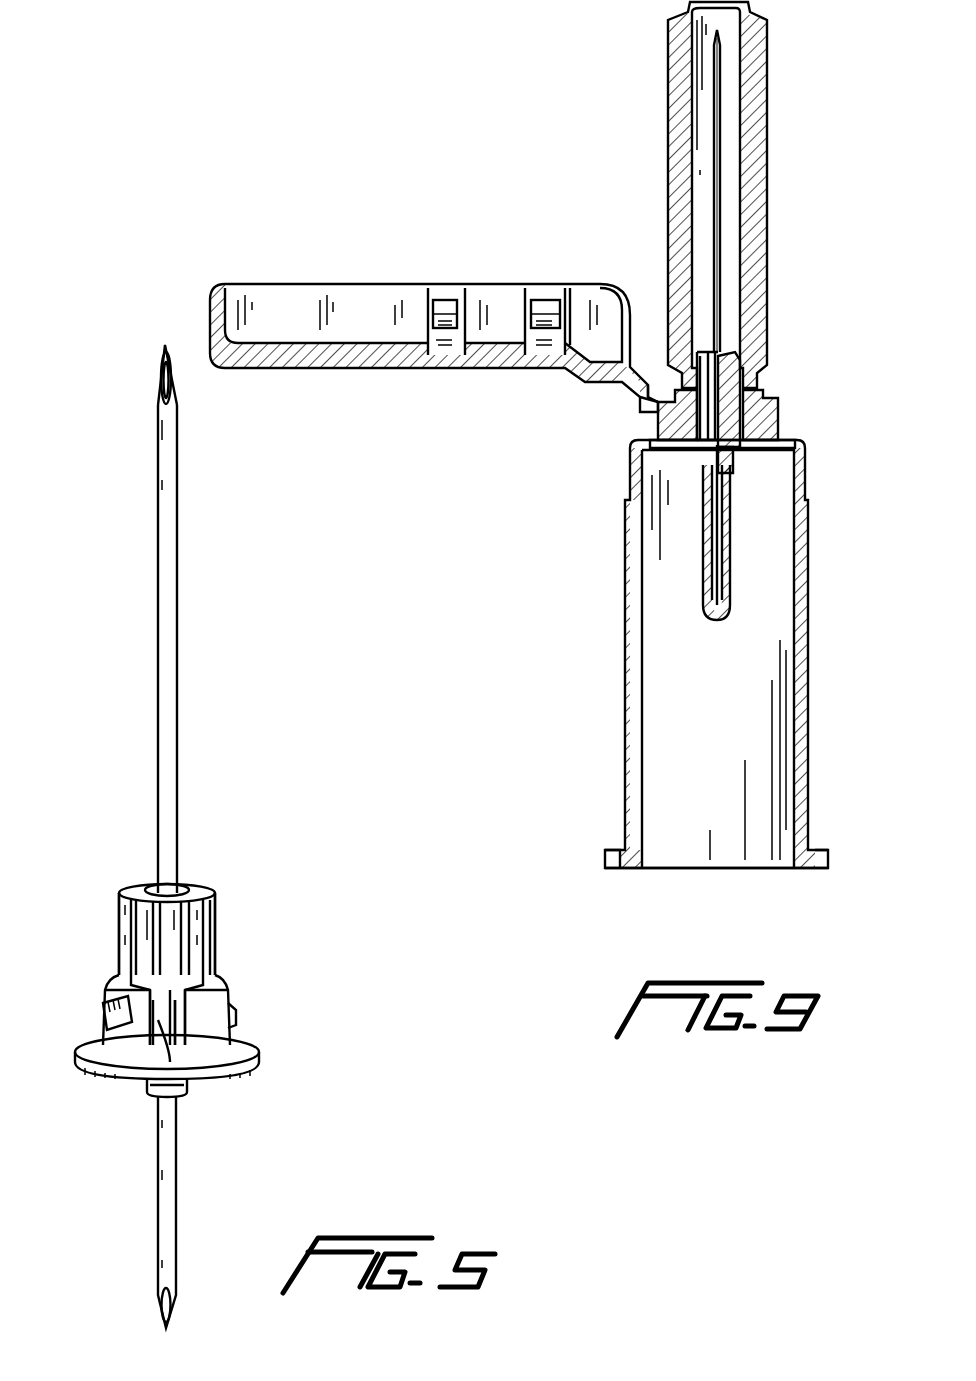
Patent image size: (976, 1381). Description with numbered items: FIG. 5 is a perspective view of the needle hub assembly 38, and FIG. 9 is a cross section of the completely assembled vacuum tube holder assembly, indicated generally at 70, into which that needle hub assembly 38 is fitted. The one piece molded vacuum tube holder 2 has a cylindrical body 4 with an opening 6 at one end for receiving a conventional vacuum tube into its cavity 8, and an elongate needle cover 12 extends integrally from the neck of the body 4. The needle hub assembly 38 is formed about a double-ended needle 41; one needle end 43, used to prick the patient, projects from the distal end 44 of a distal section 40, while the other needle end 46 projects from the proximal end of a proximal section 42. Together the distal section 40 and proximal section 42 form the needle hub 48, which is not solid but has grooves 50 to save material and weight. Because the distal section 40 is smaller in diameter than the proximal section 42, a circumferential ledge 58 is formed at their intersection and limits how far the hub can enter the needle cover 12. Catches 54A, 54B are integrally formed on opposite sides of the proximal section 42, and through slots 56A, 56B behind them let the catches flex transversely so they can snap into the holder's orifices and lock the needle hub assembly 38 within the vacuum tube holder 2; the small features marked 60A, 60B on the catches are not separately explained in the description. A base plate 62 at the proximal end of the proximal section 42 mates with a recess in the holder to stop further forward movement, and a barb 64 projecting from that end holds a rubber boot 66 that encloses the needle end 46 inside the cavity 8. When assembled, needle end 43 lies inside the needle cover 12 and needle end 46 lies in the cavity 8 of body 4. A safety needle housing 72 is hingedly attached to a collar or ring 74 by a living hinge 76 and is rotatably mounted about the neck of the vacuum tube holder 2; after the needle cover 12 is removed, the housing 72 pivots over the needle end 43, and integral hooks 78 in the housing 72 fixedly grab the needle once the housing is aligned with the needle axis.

In FIG. 9, the vacuum tube holder 2 is at (845, 532).
In FIG. 9, the cylindrical body 4 is at (808, 668).
In FIG. 9, the opening 6 is at (733, 870).
In FIG. 9, the cavity 8 is at (722, 762).
In FIG. 9, the elongate needle cover 12 is at (768, 195).
In FIG. 9, the needle hub assembly 38 is at (690, 472).
In FIG. 5, the needle hub assembly 38 is at (355, 880).
In FIG. 5, the distal section 40 is at (120, 890).
In FIG. 5, the double-ended needle 41 is at (158, 590).
In FIG. 5, the proximal section 42 is at (232, 985).
In FIG. 9, the needle end 43 is at (722, 50).
In FIG. 5, the needle end 43 is at (155, 388).
In FIG. 5, the distal end 44 is at (182, 887).
In FIG. 9, the needle end 46 is at (705, 590).
In FIG. 5, the needle end 46 is at (155, 1312).
In FIG. 9, the needle hub 48 is at (758, 366).
In FIG. 5, the grooves 50 is at (205, 1045).
In FIG. 5, the catch 54A is at (108, 985).
In FIG. 5, the catch 54B is at (232, 1010).
In FIG. 5, the through slot 56A is at (150, 1030).
In FIG. 5, the through slot 56B is at (225, 1030).
In FIG. 5, the ledge 58 is at (122, 945).
In FIG. 5, the first tab 60A is at (100, 1022).
In FIG. 5, the second tab 60B is at (240, 1022).
In FIG. 5, the base plate 62 is at (258, 1060).
In FIG. 5, the barb 64 is at (143, 1095).
In FIG. 9, the rubber boot 66 is at (733, 575).
In FIG. 9, the cap assembly 70 is at (852, 288).
In FIG. 9, the safety needle housing 72 is at (345, 368).
In FIG. 9, the collar 74 is at (780, 408).
In FIG. 9, the living hinge 76 is at (632, 397).
In FIG. 9, the integral hooks 78 is at (546, 300).